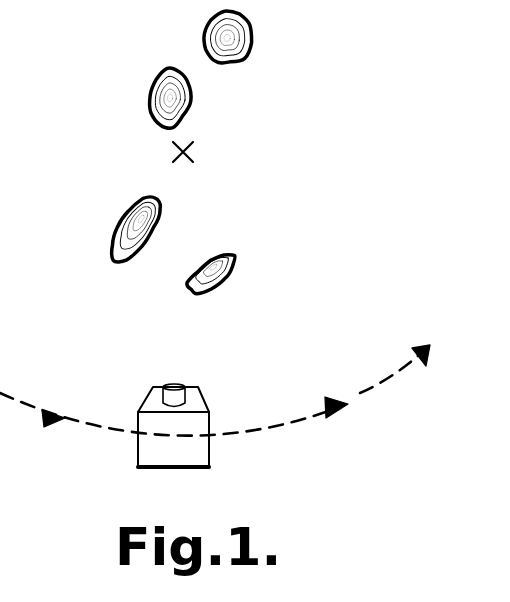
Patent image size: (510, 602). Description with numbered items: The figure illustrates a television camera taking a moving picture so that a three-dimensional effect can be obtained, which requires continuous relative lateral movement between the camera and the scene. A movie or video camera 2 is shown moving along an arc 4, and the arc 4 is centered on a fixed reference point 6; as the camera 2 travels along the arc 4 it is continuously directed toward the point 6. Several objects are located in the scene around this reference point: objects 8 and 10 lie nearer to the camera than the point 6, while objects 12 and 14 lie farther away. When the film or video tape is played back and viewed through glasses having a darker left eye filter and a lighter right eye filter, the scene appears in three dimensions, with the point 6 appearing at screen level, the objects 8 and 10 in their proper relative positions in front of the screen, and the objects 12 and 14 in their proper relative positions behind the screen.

The movie or video camera 2 is at (203, 396).
The arc 4 is at (372, 396).
The point 6 is at (195, 153).
The object 8 is at (113, 230).
The object 10 is at (236, 256).
The object 12 is at (150, 85).
The object 14 is at (251, 35).